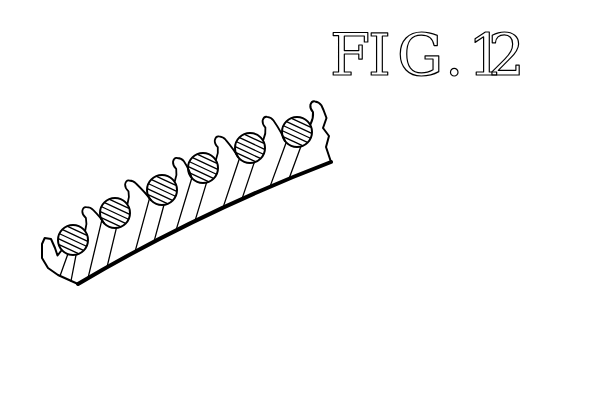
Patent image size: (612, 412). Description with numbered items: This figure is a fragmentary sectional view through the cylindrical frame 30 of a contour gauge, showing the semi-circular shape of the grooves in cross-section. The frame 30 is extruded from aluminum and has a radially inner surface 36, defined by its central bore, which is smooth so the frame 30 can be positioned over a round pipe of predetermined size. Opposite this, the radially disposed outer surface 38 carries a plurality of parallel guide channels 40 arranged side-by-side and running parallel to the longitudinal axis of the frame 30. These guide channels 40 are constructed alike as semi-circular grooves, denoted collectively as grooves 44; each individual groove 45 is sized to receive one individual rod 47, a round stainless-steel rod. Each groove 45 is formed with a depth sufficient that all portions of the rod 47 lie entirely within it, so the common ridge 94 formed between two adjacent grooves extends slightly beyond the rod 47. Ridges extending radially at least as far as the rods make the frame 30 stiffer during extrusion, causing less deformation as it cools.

The cylindrical frame 30 is at (102, 300).
The radially inner surface 36 is at (220, 209).
The outer surface 38 is at (203, 110).
The guide channels 40 is at (278, 100).
The grooves 44 is at (138, 112).
The groove 45 is at (90, 201).
The rod 47 is at (65, 228).
The common ridge 94 is at (128, 198).